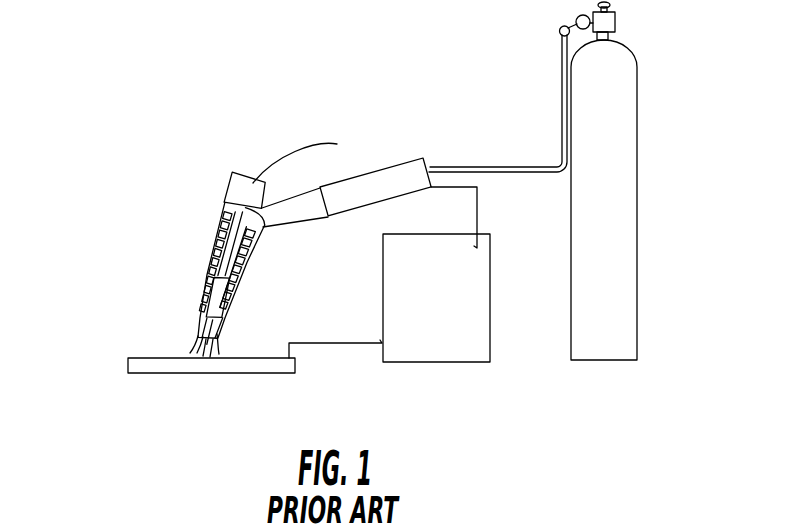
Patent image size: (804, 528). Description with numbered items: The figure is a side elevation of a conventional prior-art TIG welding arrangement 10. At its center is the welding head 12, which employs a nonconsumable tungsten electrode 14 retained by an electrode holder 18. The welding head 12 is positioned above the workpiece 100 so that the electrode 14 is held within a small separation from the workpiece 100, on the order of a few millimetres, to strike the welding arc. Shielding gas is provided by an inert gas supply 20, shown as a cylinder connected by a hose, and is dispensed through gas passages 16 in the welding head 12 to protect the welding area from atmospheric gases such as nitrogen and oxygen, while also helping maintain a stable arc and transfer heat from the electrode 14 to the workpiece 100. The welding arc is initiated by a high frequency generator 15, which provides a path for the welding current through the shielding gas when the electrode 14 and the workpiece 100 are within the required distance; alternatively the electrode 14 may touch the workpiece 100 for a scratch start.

The TIG welding arrangement 10 is at (378, 78).
The welding head 12 is at (252, 183).
The nonconsumable tungsten electrode 14 is at (227, 263).
The gas passages 16 is at (215, 310).
The electrode holder 18 is at (355, 177).
The high frequency generator 15 is at (447, 344).
The inert gas supply 20 is at (628, 217).
The workpiece 100 is at (143, 368).